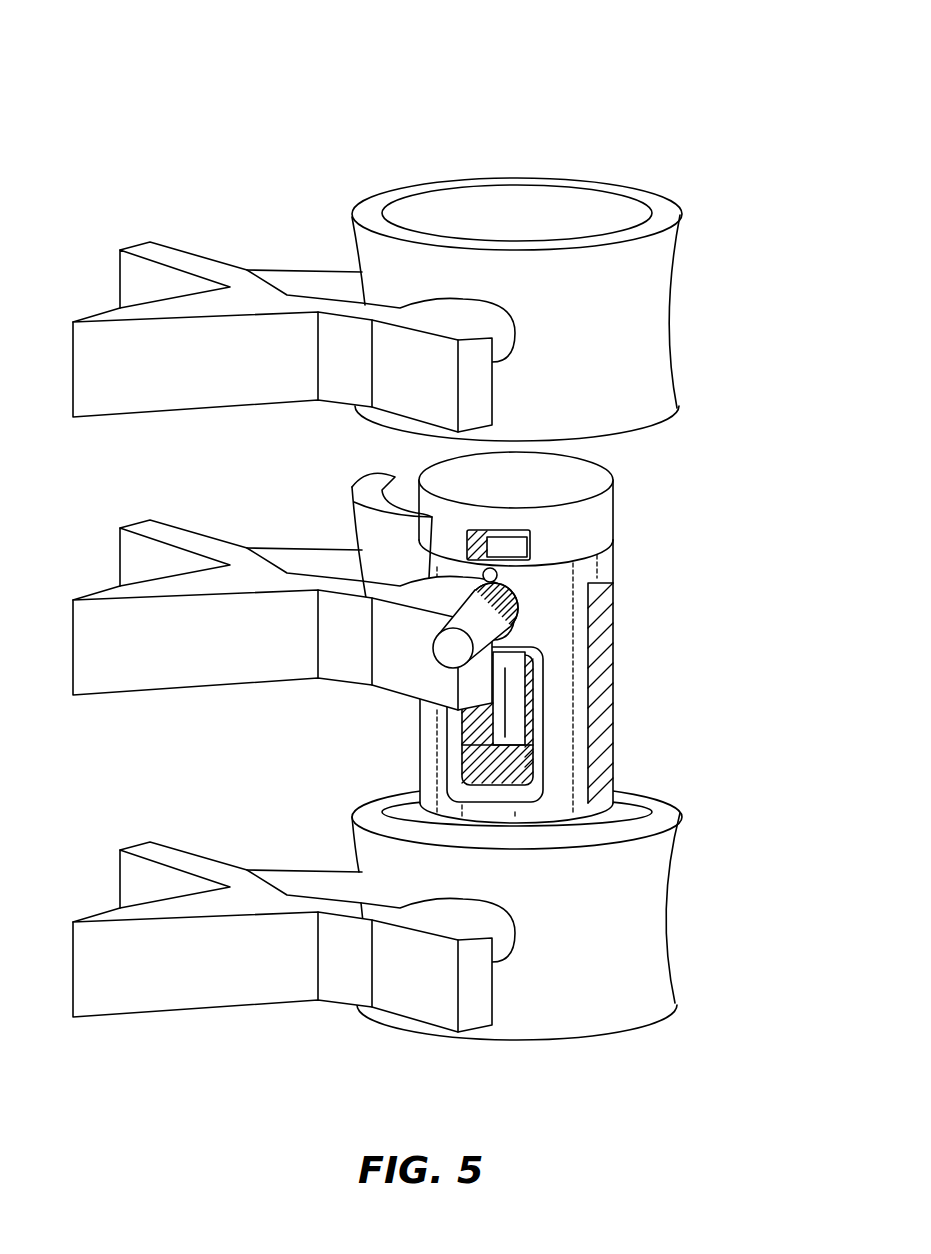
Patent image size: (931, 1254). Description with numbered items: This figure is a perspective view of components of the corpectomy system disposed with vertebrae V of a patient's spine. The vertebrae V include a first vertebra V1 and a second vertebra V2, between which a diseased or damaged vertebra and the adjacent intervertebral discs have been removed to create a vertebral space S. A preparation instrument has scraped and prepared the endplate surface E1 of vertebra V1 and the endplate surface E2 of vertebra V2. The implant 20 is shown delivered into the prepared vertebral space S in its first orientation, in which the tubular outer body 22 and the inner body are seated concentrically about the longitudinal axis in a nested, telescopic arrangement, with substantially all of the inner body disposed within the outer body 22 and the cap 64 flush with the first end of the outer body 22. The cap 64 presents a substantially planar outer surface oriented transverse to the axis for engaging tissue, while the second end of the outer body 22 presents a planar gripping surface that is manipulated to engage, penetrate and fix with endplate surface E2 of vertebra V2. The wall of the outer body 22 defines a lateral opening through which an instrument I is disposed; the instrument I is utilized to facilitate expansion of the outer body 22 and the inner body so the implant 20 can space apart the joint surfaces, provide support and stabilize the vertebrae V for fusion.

The vertebrae V is at (357, 90).
The first vertebra V1 is at (625, 308).
The endplate surface E1 is at (667, 418).
The second vertebra V2 is at (633, 933).
The endplate surface E2 is at (625, 817).
The vertebral space S is at (690, 617).
The implant 20 is at (367, 728).
The outer body 22 is at (570, 702).
The cap 64 is at (575, 522).
The instrument I is at (453, 648).